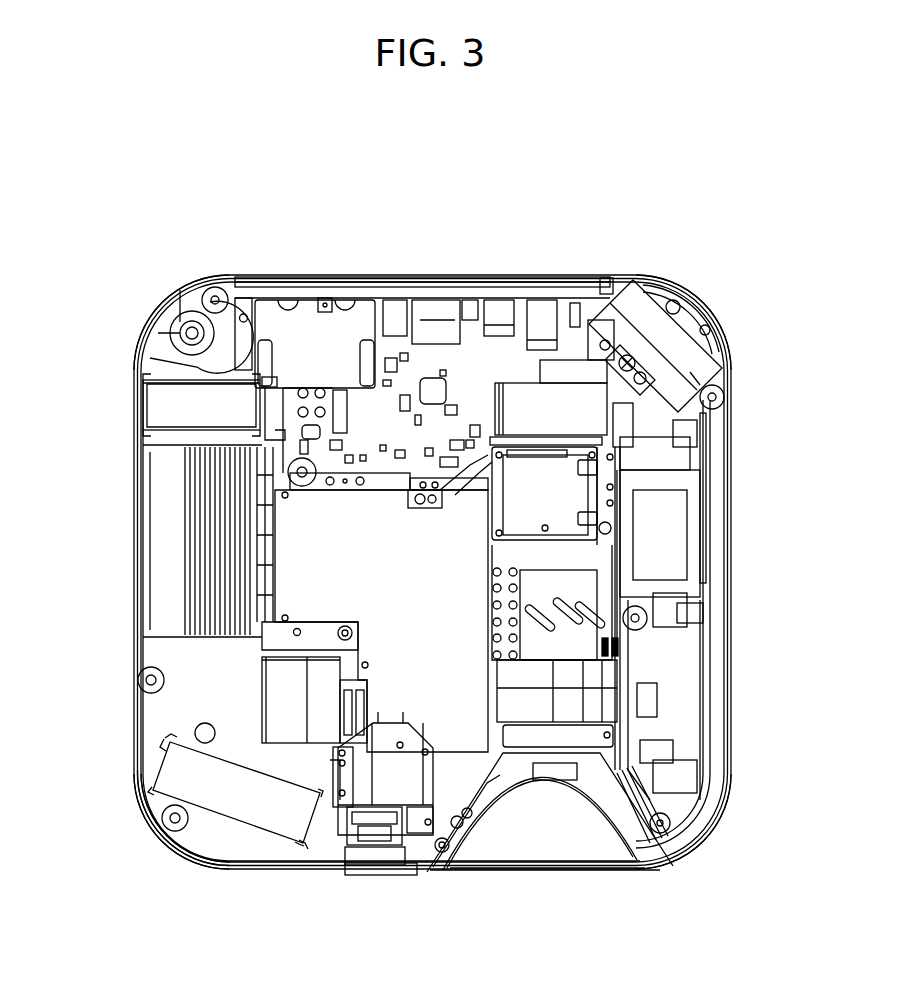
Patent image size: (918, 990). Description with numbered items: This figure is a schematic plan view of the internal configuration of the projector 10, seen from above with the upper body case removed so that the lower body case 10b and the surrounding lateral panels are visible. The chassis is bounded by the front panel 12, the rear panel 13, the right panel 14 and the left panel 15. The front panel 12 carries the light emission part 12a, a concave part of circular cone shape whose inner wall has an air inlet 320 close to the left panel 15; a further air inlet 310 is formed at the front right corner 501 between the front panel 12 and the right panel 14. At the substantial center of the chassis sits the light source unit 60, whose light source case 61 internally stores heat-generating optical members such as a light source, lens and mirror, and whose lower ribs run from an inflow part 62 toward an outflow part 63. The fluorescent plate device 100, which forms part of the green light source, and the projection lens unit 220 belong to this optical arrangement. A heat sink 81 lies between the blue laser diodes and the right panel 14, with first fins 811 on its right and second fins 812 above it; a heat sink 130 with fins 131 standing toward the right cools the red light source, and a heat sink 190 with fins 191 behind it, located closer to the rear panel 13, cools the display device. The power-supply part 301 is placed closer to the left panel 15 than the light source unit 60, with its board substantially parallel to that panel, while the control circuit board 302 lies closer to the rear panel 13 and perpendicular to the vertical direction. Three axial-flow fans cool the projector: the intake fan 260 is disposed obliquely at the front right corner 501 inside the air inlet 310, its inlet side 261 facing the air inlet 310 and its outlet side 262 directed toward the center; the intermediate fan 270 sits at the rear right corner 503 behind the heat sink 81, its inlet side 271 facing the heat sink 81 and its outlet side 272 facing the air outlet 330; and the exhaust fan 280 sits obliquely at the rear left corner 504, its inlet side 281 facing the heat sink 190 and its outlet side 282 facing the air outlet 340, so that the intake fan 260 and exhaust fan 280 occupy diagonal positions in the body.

The projector 10 is at (165, 170).
The lower body case 10b is at (225, 845).
The front panel 12 is at (418, 878).
The light emission part 12a is at (560, 852).
The rear panel 13 is at (277, 277).
The right panel 14 is at (140, 598).
The left panel 15 is at (733, 630).
The light source unit 60 is at (386, 556).
The light source case 61 is at (470, 787).
The inflow part 62 is at (328, 768).
The outflow part 63 is at (607, 273).
The heat sink 81 is at (155, 542).
The fluorescent plate device 100 is at (400, 750).
The heat sink 130 is at (280, 697).
The fins 131 is at (280, 672).
The heat sink 190 is at (527, 395).
The fins 191 is at (560, 395).
The projection lens unit 220 is at (612, 636).
The intake fan 260 is at (168, 782).
The inlet side 261 is at (273, 830).
The outlet side 262 is at (253, 770).
The intermediate fan 270 is at (148, 405).
The inlet side 271 is at (218, 427).
The outlet side 272 is at (178, 377).
The exhaust fan 280 is at (637, 297).
The inlet side 281 is at (665, 375).
The outlet side 282 is at (718, 340).
The power-supply part 301 is at (705, 553).
The control circuit board 302 is at (402, 355).
The air inlet 310 is at (172, 853).
The air inlet 320 is at (652, 858).
The air outlet 330 is at (173, 295).
The air outlet 340 is at (688, 290).
The front right corner 501 is at (142, 863).
The rear right corner 503 is at (143, 287).
The rear left corner 504 is at (723, 283).
The first fins 811 is at (155, 492).
The second fins 812 is at (197, 470).